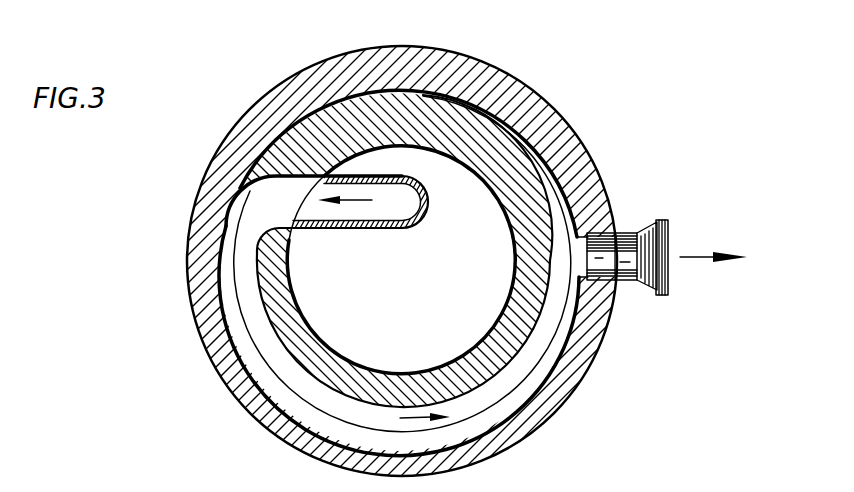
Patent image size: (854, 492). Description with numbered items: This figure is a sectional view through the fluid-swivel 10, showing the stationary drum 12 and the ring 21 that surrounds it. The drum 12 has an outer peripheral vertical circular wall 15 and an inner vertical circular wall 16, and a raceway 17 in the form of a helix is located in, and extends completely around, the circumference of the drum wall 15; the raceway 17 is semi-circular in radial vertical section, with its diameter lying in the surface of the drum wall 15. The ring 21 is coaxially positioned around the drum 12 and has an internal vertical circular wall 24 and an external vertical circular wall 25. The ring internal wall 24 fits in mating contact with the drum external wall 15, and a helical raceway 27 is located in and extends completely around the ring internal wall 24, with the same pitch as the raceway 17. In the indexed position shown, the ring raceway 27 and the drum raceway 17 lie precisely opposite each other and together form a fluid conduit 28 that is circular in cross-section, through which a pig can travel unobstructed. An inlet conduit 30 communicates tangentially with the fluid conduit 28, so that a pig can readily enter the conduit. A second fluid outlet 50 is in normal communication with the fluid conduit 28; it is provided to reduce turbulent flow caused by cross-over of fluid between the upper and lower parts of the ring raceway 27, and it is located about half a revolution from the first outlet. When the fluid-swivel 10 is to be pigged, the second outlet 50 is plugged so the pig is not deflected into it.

The fluid-swivel 10 is at (557, 103).
The stationary drum 12 is at (530, 307).
The outer peripheral vertical circular wall 15 is at (283, 373).
The inner vertical circular wall 16 is at (490, 190).
The raceway 17 is at (258, 332).
The ring 21 is at (227, 177).
The internal vertical circular wall 24 is at (260, 357).
The external vertical circular wall 25 is at (187, 270).
The helical raceway 27 is at (570, 323).
The fluid conduit 28 is at (522, 375).
The inlet conduit 30 is at (370, 229).
The second fluid outlet 50 is at (620, 233).